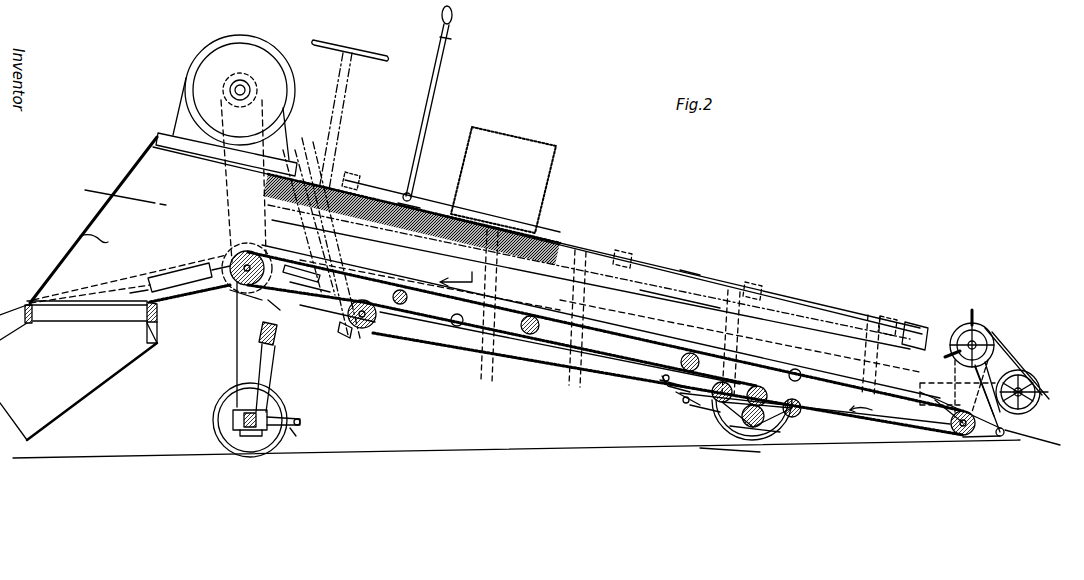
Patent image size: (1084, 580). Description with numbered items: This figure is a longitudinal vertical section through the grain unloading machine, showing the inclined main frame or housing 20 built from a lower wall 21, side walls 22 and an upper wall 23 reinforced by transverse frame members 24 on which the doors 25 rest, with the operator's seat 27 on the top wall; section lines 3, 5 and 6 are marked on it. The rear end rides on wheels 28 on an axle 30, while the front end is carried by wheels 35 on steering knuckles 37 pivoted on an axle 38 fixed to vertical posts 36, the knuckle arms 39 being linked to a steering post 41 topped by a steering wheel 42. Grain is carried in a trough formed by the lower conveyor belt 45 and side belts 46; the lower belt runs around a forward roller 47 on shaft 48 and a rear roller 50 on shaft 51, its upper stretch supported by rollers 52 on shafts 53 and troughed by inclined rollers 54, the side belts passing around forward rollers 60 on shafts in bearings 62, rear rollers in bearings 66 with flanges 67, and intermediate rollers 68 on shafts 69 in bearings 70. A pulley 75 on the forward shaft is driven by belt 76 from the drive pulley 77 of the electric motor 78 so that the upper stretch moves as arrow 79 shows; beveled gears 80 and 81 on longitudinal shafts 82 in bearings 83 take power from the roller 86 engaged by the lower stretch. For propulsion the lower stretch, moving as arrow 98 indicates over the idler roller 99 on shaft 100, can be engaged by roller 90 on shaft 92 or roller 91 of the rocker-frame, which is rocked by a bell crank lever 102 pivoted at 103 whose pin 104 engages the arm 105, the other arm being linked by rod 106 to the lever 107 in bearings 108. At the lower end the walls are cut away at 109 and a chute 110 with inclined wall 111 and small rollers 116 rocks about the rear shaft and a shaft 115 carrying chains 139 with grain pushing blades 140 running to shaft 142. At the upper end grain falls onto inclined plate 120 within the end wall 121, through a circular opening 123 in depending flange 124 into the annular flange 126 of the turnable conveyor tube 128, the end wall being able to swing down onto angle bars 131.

The section line 3— 3 is at (87, 204).
The section line 5— 5 is at (785, 280).
The section line 6— 6 is at (590, 245).
The main frame or housing 20 is at (352, 168).
The lower wall 21 is at (437, 348).
The side walls 22 is at (80, 228).
The upper wall 23 is at (365, 190).
The transverse frame members 24 is at (150, 153).
The doors 25 is at (672, 300).
The seat 27 is at (515, 128).
The rear wheels 28 is at (772, 442).
The axle 30 is at (740, 462).
The front wheels 35 is at (212, 419).
The vertical posts 36 is at (280, 372).
The steering knuckles 37 is at (238, 434).
The front axle 38 is at (240, 413).
The knuckle arms 39 is at (288, 431).
The steering post 41 is at (352, 82).
The steering wheel 42 is at (372, 45).
The lower conveyor belt 45 is at (497, 352).
The side belts 46 is at (686, 270).
The forward roller 47 is at (233, 292).
The forward roller shaft 48 is at (222, 262).
The rear roller 50 is at (985, 434).
The rear roller shaft 51 is at (958, 432).
The supporting rollers 52 is at (527, 360).
The roller shafts 53 is at (425, 314).
The inclined rollers 54 is at (590, 372).
The forward side-belt rollers 60 is at (315, 226).
The bearings 62 is at (327, 238).
The bearings 66 is at (300, 285).
The flanges 67 is at (300, 268).
The intermediate rollers 68 is at (605, 316).
The intermediate roller shafts 69 is at (730, 450).
The bearings 70 is at (624, 250).
The pulley 75 is at (246, 250).
The drive belt 76 is at (212, 187).
The drive pulley 77 is at (238, 80).
The electric motor 78 is at (262, 40).
The arrow 79 is at (462, 269).
The beveled gears 80 is at (235, 361).
The beveled gears 81 is at (266, 345).
The longitudinal shafts 82 is at (353, 330).
The bearings 83 is at (366, 338).
The roller 86 is at (400, 306).
The forward-drive roller 90 is at (802, 408).
The reverse-drive roller 91 is at (726, 384).
The roller shaft 92 is at (800, 428).
The arrow 98 is at (866, 416).
The idler roller 99 is at (765, 398).
The idler shaft 100 is at (759, 386).
The bell crank lever 102 is at (668, 392).
The pivot 103 is at (690, 400).
The pin 104 is at (714, 383).
The rocker-frame arm 105 is at (705, 412).
The rod 106 is at (612, 378).
The control lever 107 is at (435, 92).
The lever bearings 108 is at (413, 194).
The cut-away edge 109 is at (890, 432).
The chute 110 is at (303, 422).
The lower inclined wall 111 is at (995, 442).
The shaft 115 is at (998, 338).
The small rollers 116 is at (1003, 442).
The inclined discharge plate 120 is at (175, 300).
The end wall 121 is at (118, 166).
The circular discharge opening 123 is at (112, 322).
The depending flange 124 is at (128, 371).
The annular flange 126 is at (160, 331).
The inclined conveyor tube 128 is at (50, 431).
The angle bars 131 is at (176, 266).
The sprocket chains 139 is at (1025, 325).
The grain pushing blades 140 is at (1025, 348).
The shaft 142 is at (1036, 384).